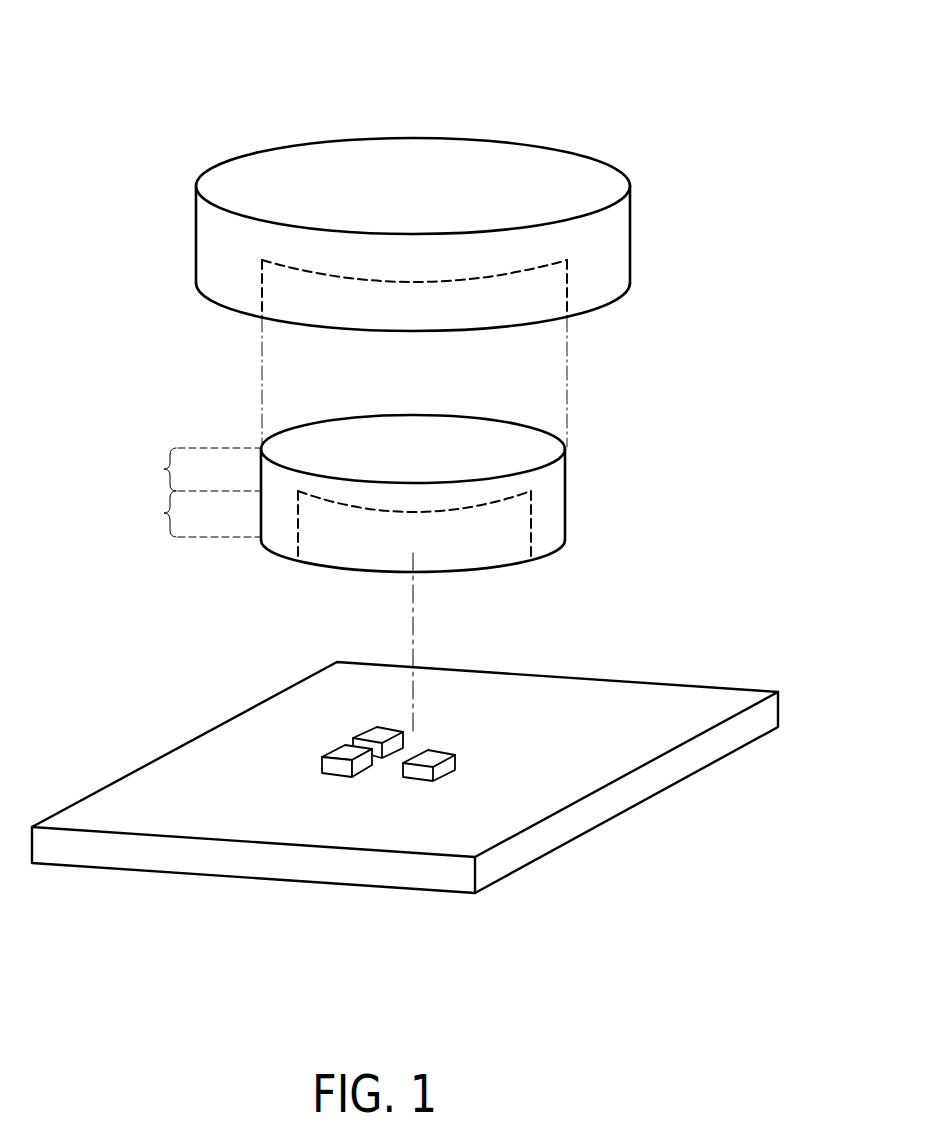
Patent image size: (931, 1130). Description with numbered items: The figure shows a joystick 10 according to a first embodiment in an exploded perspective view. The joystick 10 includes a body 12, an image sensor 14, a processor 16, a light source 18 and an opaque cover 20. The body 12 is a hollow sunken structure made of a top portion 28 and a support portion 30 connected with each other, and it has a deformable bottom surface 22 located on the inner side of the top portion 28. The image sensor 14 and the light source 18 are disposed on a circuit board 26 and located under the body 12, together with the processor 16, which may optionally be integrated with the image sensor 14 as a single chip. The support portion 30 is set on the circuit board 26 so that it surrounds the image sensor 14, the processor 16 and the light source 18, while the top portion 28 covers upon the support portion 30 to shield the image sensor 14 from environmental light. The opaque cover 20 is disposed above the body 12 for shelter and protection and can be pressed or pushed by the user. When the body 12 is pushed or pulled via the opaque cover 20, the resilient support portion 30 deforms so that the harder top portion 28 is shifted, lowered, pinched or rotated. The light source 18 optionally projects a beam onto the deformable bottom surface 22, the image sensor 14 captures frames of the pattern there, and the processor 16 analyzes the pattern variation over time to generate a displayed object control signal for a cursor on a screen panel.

The joystick 10 is at (705, 55).
The body 12 is at (393, 575).
The image sensor 14 is at (340, 748).
The processor 16 is at (430, 755).
The light source 18 is at (372, 735).
The opaque cover 20 is at (612, 237).
The deformable bottom surface 22 is at (478, 512).
The circuit board 26 is at (693, 693).
The top portion 28 is at (191, 469).
The support portion 30 is at (191, 514).